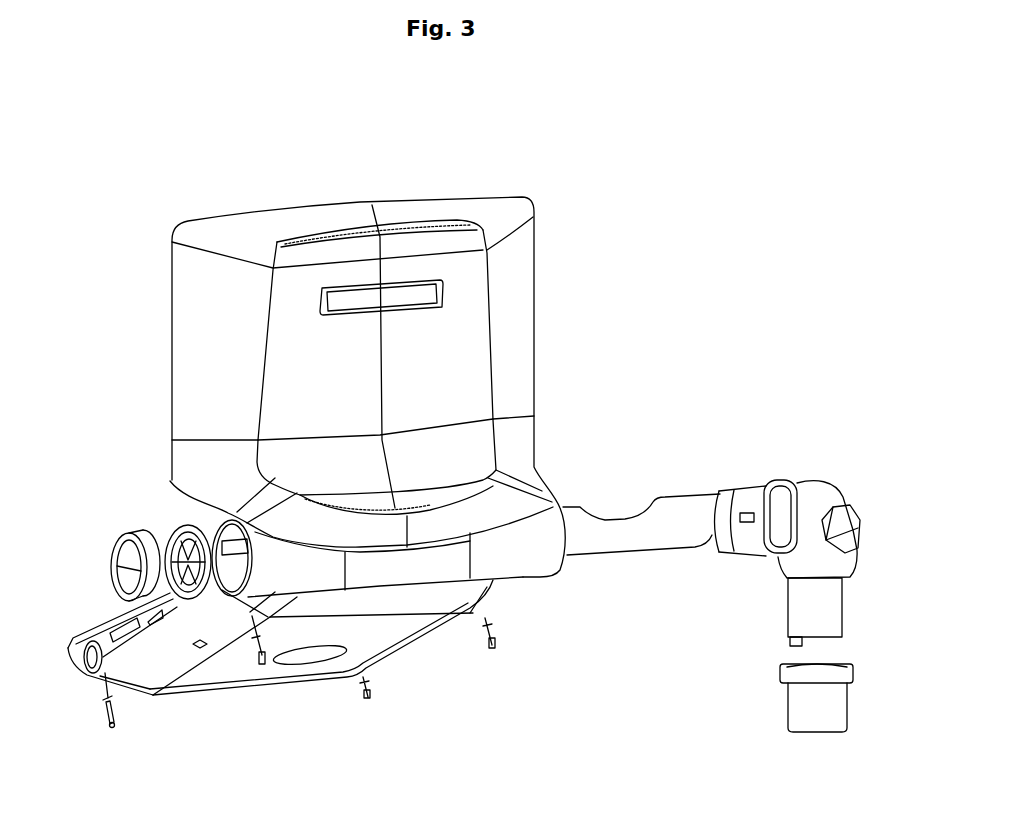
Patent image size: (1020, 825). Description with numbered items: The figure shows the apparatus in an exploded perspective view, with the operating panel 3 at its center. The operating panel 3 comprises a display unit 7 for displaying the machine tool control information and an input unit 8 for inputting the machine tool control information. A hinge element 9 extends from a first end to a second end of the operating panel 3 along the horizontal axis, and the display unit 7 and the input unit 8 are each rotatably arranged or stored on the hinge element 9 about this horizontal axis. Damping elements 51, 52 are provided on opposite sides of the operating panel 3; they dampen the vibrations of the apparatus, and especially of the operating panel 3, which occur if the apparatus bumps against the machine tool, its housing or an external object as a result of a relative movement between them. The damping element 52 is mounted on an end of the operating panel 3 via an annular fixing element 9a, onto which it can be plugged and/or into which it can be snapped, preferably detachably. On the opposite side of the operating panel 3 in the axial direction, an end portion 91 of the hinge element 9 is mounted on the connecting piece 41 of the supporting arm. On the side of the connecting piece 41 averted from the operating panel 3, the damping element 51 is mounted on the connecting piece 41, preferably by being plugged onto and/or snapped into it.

The operating panel 3 is at (572, 194).
The display unit 7 is at (393, 207).
The input unit 8 is at (383, 642).
The hinge element 9 is at (623, 533).
The annular fixing element 9a is at (170, 530).
The connecting piece 41 is at (813, 493).
The damping element 51 is at (843, 513).
The damping element 52 is at (133, 533).
The end portion 91 is at (747, 487).